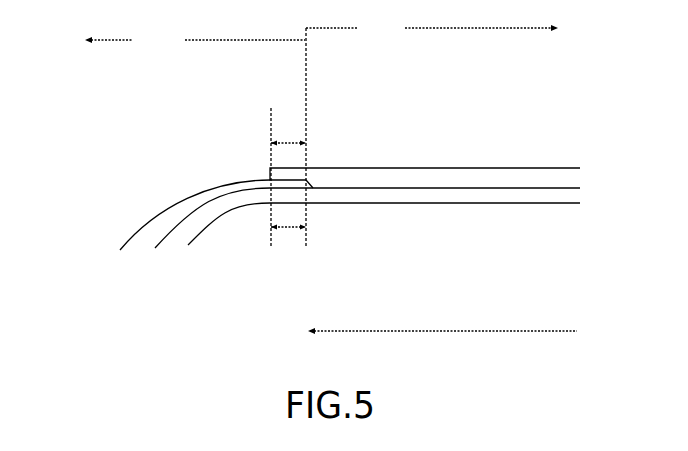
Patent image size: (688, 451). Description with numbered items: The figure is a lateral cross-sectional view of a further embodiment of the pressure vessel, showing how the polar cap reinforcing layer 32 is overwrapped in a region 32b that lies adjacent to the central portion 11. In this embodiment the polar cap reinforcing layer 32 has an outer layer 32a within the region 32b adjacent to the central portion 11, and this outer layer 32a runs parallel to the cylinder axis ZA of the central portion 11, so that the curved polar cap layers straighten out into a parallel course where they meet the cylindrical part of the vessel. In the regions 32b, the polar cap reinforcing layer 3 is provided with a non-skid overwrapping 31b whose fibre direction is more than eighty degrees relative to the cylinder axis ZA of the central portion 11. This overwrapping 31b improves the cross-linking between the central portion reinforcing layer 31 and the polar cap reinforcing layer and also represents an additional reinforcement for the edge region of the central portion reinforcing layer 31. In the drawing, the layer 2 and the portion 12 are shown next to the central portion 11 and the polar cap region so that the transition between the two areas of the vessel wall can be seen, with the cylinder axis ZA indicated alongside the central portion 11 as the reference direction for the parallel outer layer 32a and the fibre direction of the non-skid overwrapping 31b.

The substrate 2 is at (171, 254).
The polar cap reinforcing layer 3 is at (304, 162).
The central portion reinforcing layer 31 is at (400, 152).
The polar cap reinforcing layer 32 is at (150, 228).
The non-skid overwrapping 31b is at (285, 128).
The outer layer 32a is at (243, 174).
The region adjacent to the central portion 32b is at (283, 250).
The central portion 11 is at (432, 29).
The bent region 12 is at (195, 41).
The cylinder axis ZA is at (460, 334).